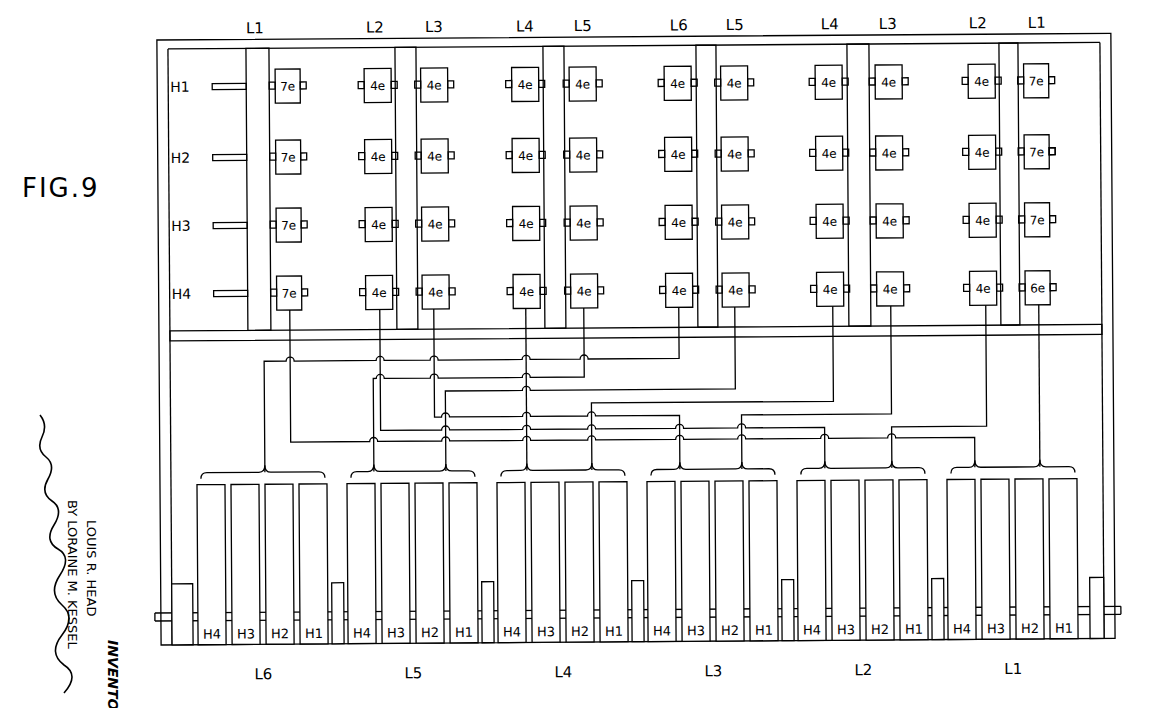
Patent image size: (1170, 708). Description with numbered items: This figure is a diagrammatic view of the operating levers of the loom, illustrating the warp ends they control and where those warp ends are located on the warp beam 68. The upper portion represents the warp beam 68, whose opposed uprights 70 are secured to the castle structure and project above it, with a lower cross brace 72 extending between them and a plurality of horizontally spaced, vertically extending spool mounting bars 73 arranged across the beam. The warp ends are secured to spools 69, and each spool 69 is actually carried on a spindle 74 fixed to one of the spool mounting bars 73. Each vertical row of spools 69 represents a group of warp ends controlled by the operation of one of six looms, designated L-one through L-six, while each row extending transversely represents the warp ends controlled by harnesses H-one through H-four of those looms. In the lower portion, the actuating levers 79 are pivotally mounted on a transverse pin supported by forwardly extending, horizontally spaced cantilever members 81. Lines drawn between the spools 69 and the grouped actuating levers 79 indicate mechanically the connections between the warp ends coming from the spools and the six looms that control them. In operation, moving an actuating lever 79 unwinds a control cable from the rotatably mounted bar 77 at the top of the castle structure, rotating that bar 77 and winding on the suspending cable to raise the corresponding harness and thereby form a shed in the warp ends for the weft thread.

The warp beam 68 is at (1113, 72).
The spool 69 is at (1049, 132).
The upright 70 is at (165, 447).
The lower cross brace 72 is at (233, 341).
The spool mounting bar 73 is at (1010, 113).
The spindle 74 is at (1057, 148).
The rotatably mounted bar 77 is at (1088, 32).
The actuating lever 79 is at (1035, 529).
The cantilever member 81 is at (1097, 633).